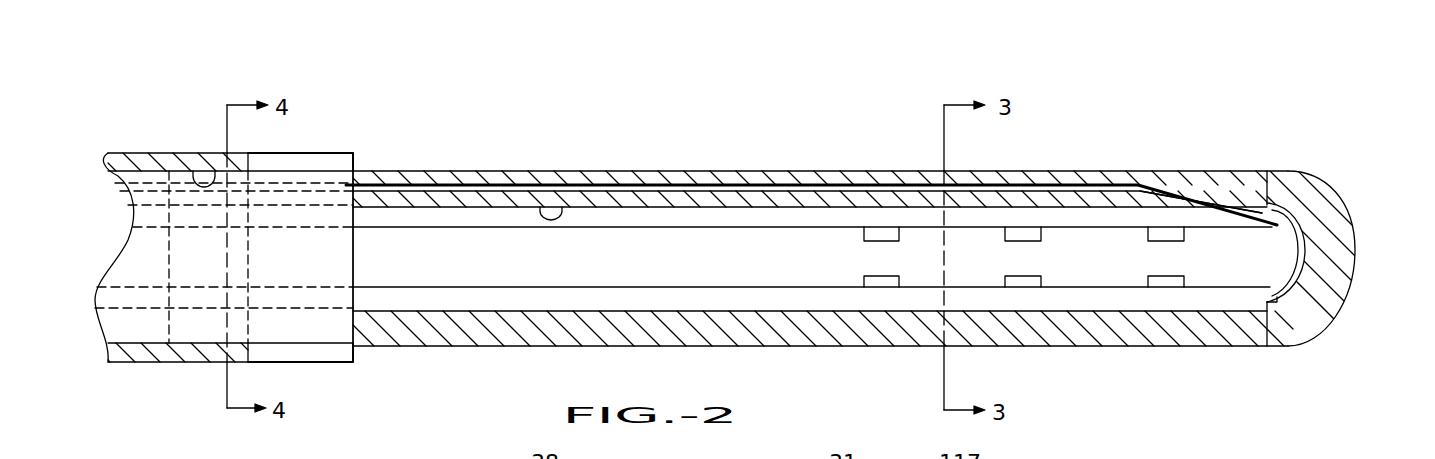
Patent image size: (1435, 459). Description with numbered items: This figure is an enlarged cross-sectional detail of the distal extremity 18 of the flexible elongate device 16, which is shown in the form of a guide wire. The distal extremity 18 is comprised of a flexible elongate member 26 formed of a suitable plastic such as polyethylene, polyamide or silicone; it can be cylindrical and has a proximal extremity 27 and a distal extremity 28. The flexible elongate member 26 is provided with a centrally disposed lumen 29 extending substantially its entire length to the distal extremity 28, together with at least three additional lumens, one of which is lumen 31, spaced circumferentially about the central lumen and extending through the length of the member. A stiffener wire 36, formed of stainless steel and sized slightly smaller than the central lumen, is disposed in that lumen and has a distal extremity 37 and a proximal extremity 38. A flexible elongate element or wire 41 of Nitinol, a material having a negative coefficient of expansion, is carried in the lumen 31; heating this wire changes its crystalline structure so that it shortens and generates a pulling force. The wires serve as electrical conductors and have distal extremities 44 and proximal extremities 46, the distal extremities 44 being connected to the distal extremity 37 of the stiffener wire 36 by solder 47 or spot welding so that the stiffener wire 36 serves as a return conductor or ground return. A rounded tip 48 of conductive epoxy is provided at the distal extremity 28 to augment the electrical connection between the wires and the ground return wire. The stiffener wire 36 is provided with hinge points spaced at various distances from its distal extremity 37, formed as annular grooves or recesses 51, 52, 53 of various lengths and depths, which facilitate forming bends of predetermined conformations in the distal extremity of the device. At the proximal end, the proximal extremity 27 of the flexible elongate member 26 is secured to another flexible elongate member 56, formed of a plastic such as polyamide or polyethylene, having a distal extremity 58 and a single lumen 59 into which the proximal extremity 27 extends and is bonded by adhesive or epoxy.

The flexible elongate device 16 is at (300, 65).
The distal extremity 18 is at (830, 161).
The flexible elongate member 26 is at (488, 170).
The proximal extremity 27 is at (434, 171).
The distal extremity 28 is at (1081, 171).
The centrally disposed lumen 29 is at (562, 207).
The additional lumen 31 is at (637, 185).
The stiffener wire 36 is at (644, 241).
The distal extremity 37 is at (1214, 258).
The proximal extremity 38 is at (380, 257).
The flexible elongate element or wire 41 is at (718, 183).
The distal extremities 44 is at (1240, 170).
The proximal extremities 46 is at (395, 171).
The solder 47 is at (1330, 255).
The rounded tip 48 is at (1322, 220).
The groove or recess 51 is at (1172, 280).
The groove or recess 52 is at (1035, 279).
The groove or recess 53 is at (895, 279).
The flexible elongate member 56 is at (125, 143).
The distal extremity 58 is at (335, 152).
The single lumen 59 is at (215, 171).